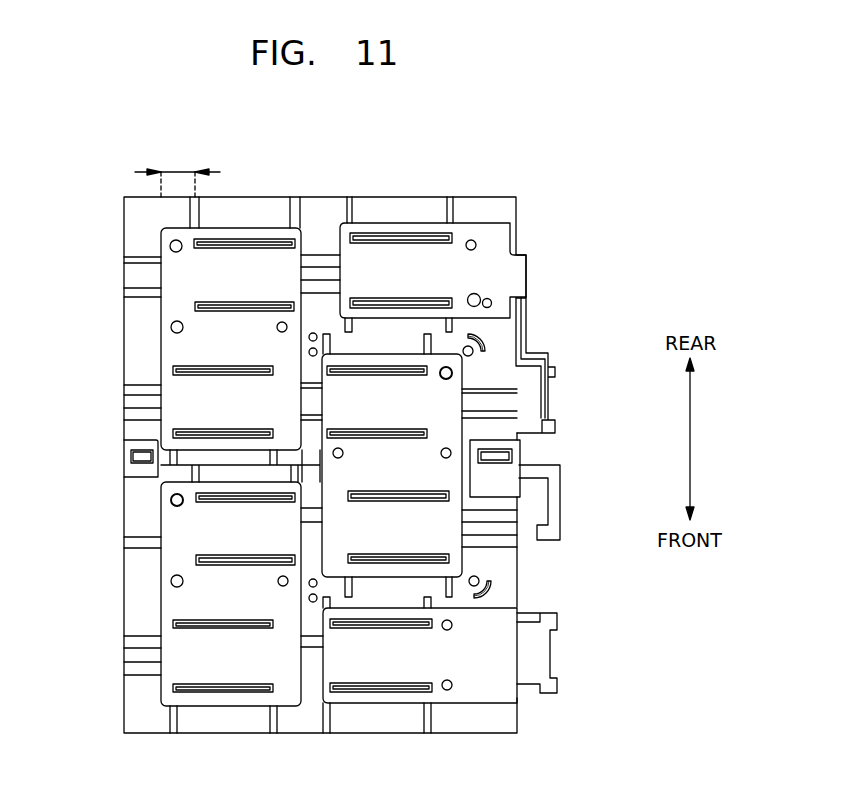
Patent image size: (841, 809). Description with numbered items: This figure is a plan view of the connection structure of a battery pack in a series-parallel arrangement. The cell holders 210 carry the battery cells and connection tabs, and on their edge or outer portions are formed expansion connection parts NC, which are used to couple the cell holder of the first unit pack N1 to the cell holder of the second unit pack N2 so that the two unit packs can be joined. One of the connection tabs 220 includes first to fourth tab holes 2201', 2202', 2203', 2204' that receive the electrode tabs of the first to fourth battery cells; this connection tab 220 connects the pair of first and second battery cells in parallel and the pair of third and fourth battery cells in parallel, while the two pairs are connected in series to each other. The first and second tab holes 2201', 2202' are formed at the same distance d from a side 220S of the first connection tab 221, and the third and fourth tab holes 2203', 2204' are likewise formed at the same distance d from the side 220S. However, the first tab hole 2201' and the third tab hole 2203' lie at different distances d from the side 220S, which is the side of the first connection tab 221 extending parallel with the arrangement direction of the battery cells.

The cell holder 210 is at (500, 205).
The connection tab 220 is at (496, 273).
The first connection tab 221 is at (500, 267).
The side 220S is at (168, 245).
The first tab hole 2201' is at (244, 182).
The second tab hole 2202' is at (250, 231).
The third tab hole 2203' is at (151, 362).
The fourth tab hole 2204' is at (151, 425).
The distance d is at (177, 172).
The first unit pack N1 is at (585, 583).
The second unit pack N2 is at (584, 315).
The expansion connection part NC is at (552, 450).